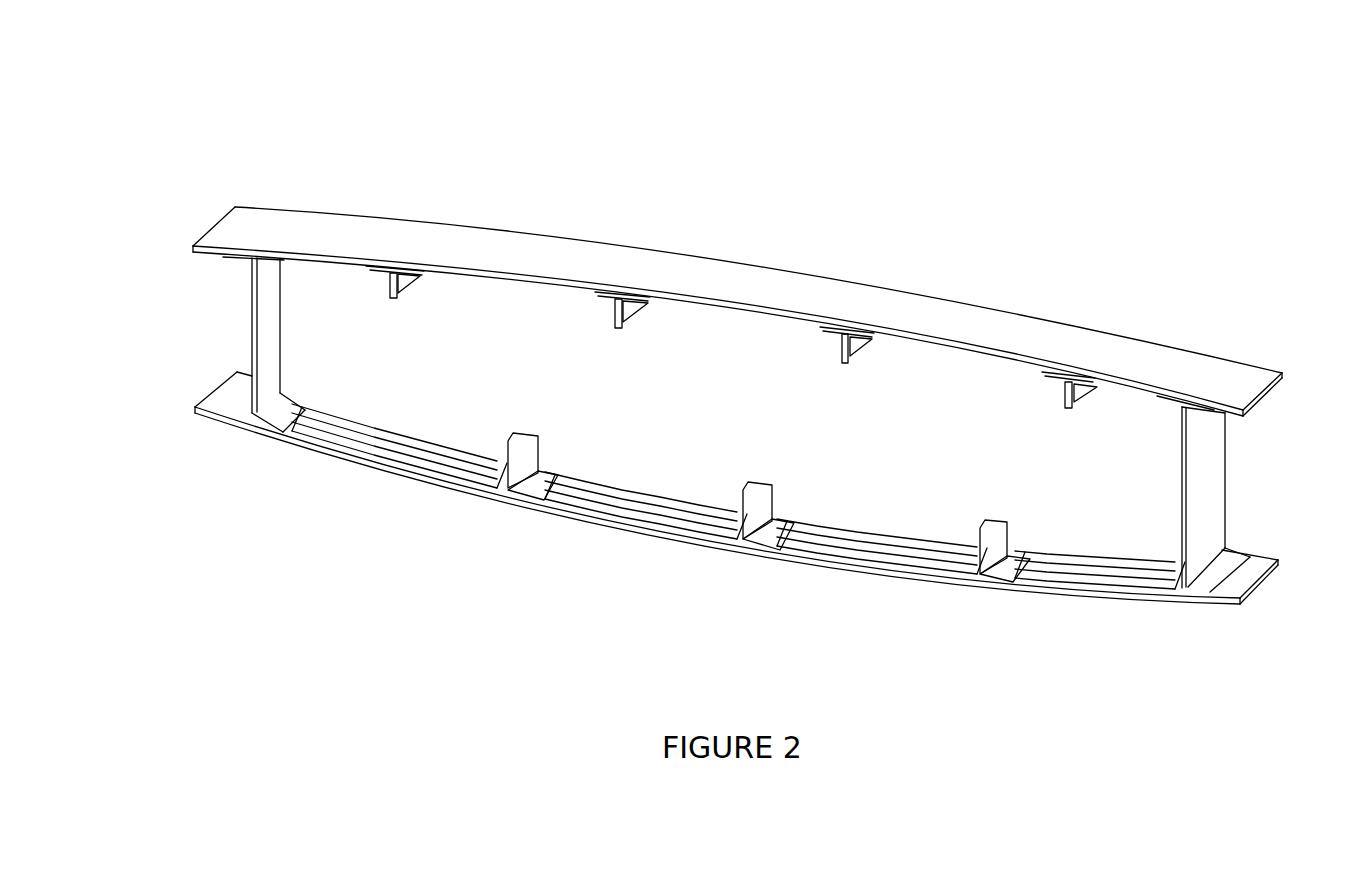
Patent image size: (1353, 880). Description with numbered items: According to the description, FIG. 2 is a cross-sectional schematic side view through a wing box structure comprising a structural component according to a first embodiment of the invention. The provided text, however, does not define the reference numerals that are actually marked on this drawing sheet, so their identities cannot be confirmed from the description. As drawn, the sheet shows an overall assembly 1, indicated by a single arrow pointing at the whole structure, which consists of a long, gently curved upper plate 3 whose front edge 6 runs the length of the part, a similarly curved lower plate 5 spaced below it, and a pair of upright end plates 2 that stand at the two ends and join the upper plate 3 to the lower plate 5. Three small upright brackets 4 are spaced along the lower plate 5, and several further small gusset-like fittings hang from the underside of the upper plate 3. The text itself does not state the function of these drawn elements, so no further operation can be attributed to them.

The curved support assembly 1 is at (256, 128).
The end plate 2 is at (254, 323).
The top curved plate 3 is at (510, 310).
The bracket 4 is at (530, 488).
The bottom curved plate 5 is at (635, 530).
The top plate front edge 6 is at (730, 282).